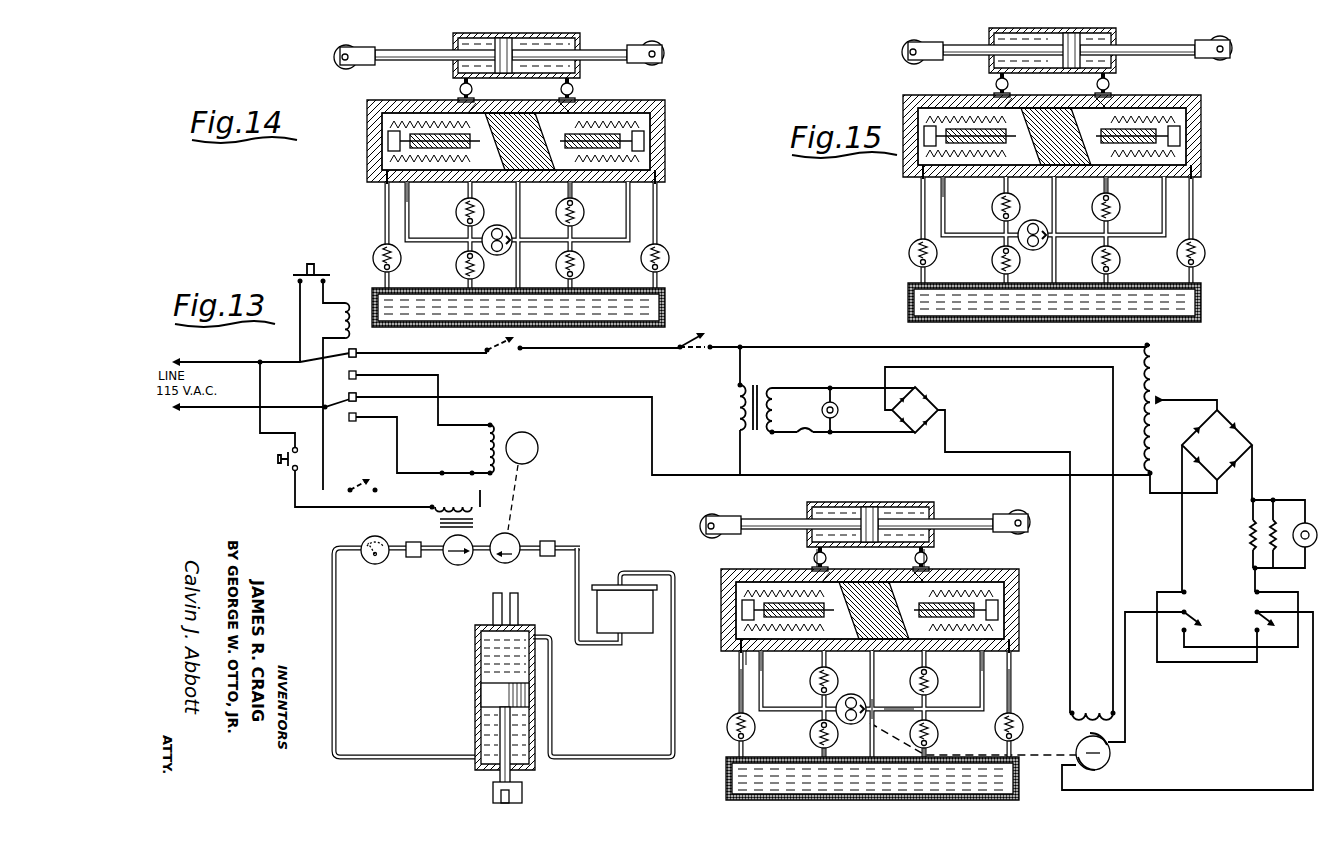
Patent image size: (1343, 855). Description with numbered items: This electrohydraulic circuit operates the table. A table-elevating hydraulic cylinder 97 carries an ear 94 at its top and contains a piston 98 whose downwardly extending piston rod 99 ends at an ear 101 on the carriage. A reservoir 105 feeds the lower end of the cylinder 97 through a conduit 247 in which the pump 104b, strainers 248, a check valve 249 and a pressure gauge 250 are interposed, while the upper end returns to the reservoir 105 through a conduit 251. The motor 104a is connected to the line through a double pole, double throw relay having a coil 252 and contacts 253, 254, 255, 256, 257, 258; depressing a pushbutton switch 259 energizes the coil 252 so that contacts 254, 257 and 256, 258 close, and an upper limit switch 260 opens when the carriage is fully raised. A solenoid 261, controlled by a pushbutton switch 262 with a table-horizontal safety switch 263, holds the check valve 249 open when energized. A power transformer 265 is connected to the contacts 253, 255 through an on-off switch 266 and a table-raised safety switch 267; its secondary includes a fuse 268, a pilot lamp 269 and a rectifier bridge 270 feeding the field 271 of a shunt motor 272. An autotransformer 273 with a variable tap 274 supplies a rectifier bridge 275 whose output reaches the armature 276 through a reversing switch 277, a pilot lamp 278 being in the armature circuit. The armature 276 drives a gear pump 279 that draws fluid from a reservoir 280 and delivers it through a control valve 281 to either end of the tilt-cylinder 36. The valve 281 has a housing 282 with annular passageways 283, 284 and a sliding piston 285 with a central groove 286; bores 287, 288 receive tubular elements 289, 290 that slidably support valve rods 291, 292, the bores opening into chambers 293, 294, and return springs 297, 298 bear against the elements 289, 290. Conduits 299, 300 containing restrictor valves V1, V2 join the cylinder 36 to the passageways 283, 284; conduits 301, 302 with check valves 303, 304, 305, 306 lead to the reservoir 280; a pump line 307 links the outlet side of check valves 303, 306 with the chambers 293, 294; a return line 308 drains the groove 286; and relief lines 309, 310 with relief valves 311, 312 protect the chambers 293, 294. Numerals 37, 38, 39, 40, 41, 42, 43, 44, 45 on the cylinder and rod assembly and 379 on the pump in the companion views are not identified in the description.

In FIG. 14, the tilt-cylinder 36 is at (548, 33).
In FIG. 15, the tilt-cylinder 36 is at (1070, 39).
In FIG. 13, the tilt-cylinder 36 is at (871, 511).
In FIG. 14, the piston 37 is at (500, 38).
In FIG. 15, the piston 37 is at (1083, 36).
In FIG. 13, the piston 37 is at (882, 507).
In FIG. 14, the piston rod 38 is at (596, 50).
In FIG. 15, the piston rod 38 is at (1138, 32).
In FIG. 13, the piston rod 38 is at (935, 508).
In FIG. 14, the piston rod 39 is at (395, 50).
In FIG. 15, the piston rod 39 is at (1004, 32).
In FIG. 13, the piston rod 39 is at (802, 507).
In FIG. 14, the clevis 40 is at (647, 64).
In FIG. 15, the clevis 40 is at (1218, 31).
In FIG. 13, the clevis 40 is at (1010, 502).
In FIG. 14, the ring 41 is at (352, 68).
In FIG. 15, the ring 41 is at (914, 34).
In FIG. 13, the ring 41 is at (720, 505).
In FIG. 14, the pin 42 is at (658, 55).
In FIG. 15, the pin 42 is at (1246, 55).
In FIG. 13, the pin 42 is at (1035, 537).
In FIG. 14, the pin 43 is at (345, 57).
In FIG. 15, the pin 43 is at (901, 47).
In FIG. 13, the pin 43 is at (695, 530).
In FIG. 14, the ring 44 is at (655, 44).
In FIG. 15, the ring 44 is at (1229, 63).
In FIG. 13, the ring 44 is at (1028, 510).
In FIG. 14, the clevis 45 is at (340, 50).
In FIG. 15, the clevis 45 is at (887, 67).
In FIG. 13, the clevis 45 is at (696, 507).
In FIG. 14, the restrictor valve V1 is at (574, 88).
In FIG. 15, the restrictor valve V1 is at (1132, 85).
In FIG. 13, the restrictor valve V1 is at (936, 525).
In FIG. 14, the restrictor valve V2 is at (459, 88).
In FIG. 15, the restrictor valve V2 is at (978, 85).
In FIG. 13, the restrictor valve V2 is at (833, 560).
In FIG. 13, the ear 94 is at (518, 600).
In FIG. 13, the table-elevating hydraulic cylinder 97 is at (478, 718).
In FIG. 13, the piston 98 is at (490, 683).
In FIG. 13, the piston rod 99 is at (512, 774).
In FIG. 13, the ear 101 is at (524, 795).
In FIG. 13, the motor 104a is at (538, 450).
In FIG. 13, the pump 104b is at (505, 565).
In FIG. 13, the hydraulic fluid reservoir 105 is at (640, 635).
In FIG. 13, the conduit 247 is at (334, 610).
In FIG. 13, the strainers 248 is at (413, 560).
In FIG. 13, the check valve 249 is at (458, 567).
In FIG. 13, the pressure gauge 250 is at (372, 566).
In FIG. 13, the conduit 251 is at (620, 750).
In FIG. 13, the relay coil 252 is at (350, 302).
In FIG. 13, the relay contact 253 is at (358, 350).
In FIG. 13, the relay contact 254 is at (360, 355).
In FIG. 13, the relay contact 255 is at (360, 395).
In FIG. 13, the relay contact 256 is at (360, 400).
In FIG. 13, the relay contact 257 is at (346, 376).
In FIG. 13, the relay contact 258 is at (352, 420).
In FIG. 13, the pushbutton switch 259 is at (300, 272).
In FIG. 13, the upper limit switch 260 is at (444, 472).
In FIG. 13, the solenoid 261 is at (435, 513).
In FIG. 13, the pushbutton switch 262 is at (283, 466).
In FIG. 13, the table-horizontal safety switch 263 is at (364, 480).
In FIG. 13, the power transformer 265 is at (752, 440).
In FIG. 13, the on-off switch 266 is at (694, 353).
In FIG. 13, the table-raised safety switch 267 is at (500, 355).
In FIG. 13, the fuse 268 is at (808, 435).
In FIG. 13, the pilot lamp 269 is at (838, 410).
In FIG. 13, the rectifier bridge 270 is at (930, 388).
In FIG. 13, the field 271 is at (1092, 710).
In FIG. 13, the shunt motor 272 is at (1112, 753).
In FIG. 13, the autotransformer 273 is at (1160, 370).
In FIG. 13, the variable tap 274 is at (1168, 398).
In FIG. 13, the rectifier bridge 275 is at (1232, 412).
In FIG. 13, the armature 276 is at (1108, 768).
In FIG. 13, the reversing switch 277 is at (1212, 612).
In FIG. 13, the pilot lamp 278 is at (1310, 523).
In FIG. 13, the gear pump 279 is at (849, 693).
In FIG. 13, the reservoir 280 is at (851, 778).
In FIG. 14, the control valve 281 is at (668, 142).
In FIG. 15, the control valve 281 is at (1087, 136).
In FIG. 13, the control valve 281 is at (906, 610).
In FIG. 14, the hollow housing 282 is at (665, 113).
In FIG. 15, the hollow housing 282 is at (1074, 136).
In FIG. 13, the hollow housing 282 is at (891, 610).
In FIG. 14, the annular passageway 283 is at (476, 103).
In FIG. 15, the annular passageway 283 is at (1027, 93).
In FIG. 13, the annular passageway 283 is at (800, 566).
In FIG. 14, the annular passageway 284 is at (580, 184).
In FIG. 15, the annular passageway 284 is at (1131, 191).
In FIG. 13, the annular passageway 284 is at (947, 610).
In FIG. 14, the piston 285 is at (415, 184).
In FIG. 15, the piston 285 is at (999, 191).
In FIG. 13, the piston 285 is at (783, 666).
In FIG. 14, the annular groove 286 is at (522, 106).
In FIG. 15, the annular groove 286 is at (1082, 91).
In FIG. 13, the annular groove 286 is at (897, 566).
In FIG. 13, the coaxial bore 287 is at (734, 585).
In FIG. 13, the coaxial bore 288 is at (887, 581).
In FIG. 13, the tubular element 289 is at (982, 585).
In FIG. 13, the tubular element 290 is at (759, 590).
In FIG. 13, the valve rod 291 is at (1025, 654).
In FIG. 13, the valve rod 292 is at (720, 653).
In FIG. 14, the chamber 293 is at (660, 186).
In FIG. 15, the chamber 293 is at (1201, 185).
In FIG. 13, the chamber 293 is at (1040, 645).
In FIG. 14, the chamber 294 is at (380, 182).
In FIG. 15, the chamber 294 is at (888, 180).
In FIG. 13, the chamber 294 is at (712, 636).
In FIG. 13, the return spring 297 is at (957, 665).
In FIG. 13, the return spring 298 is at (722, 669).
In FIG. 13, the conduit 299 is at (950, 551).
In FIG. 13, the conduit 300 is at (792, 551).
In FIG. 13, the conduit 301 is at (962, 750).
In FIG. 13, the conduit 302 is at (794, 750).
In FIG. 14, the check valve 303 is at (585, 272).
In FIG. 15, the check valve 303 is at (1124, 262).
In FIG. 13, the check valve 303 is at (945, 733).
In FIG. 14, the check valve 304 is at (583, 215).
In FIG. 15, the check valve 304 is at (1121, 211).
In FIG. 13, the check valve 304 is at (945, 684).
In FIG. 14, the check valve 305 is at (457, 215).
In FIG. 15, the check valve 305 is at (987, 210).
In FIG. 13, the check valve 305 is at (806, 688).
In FIG. 14, the check valve 306 is at (456, 268).
In FIG. 15, the check valve 306 is at (979, 260).
In FIG. 13, the check valve 306 is at (806, 734).
In FIG. 13, the pump line 307 is at (927, 702).
In FIG. 13, the return line 308 is at (858, 729).
In FIG. 13, the relief line 309 is at (1030, 694).
In FIG. 13, the relief line 310 is at (717, 694).
In FIG. 14, the relief valve 311 is at (670, 258).
In FIG. 15, the relief valve 311 is at (1209, 253).
In FIG. 13, the relief valve 311 is at (1025, 725).
In FIG. 14, the relief valve 312 is at (374, 256).
In FIG. 15, the relief valve 312 is at (900, 244).
In FIG. 13, the relief valve 312 is at (719, 731).
In FIG. 14, the pump 379 is at (490, 255).
In FIG. 15, the pump 379 is at (1031, 252).